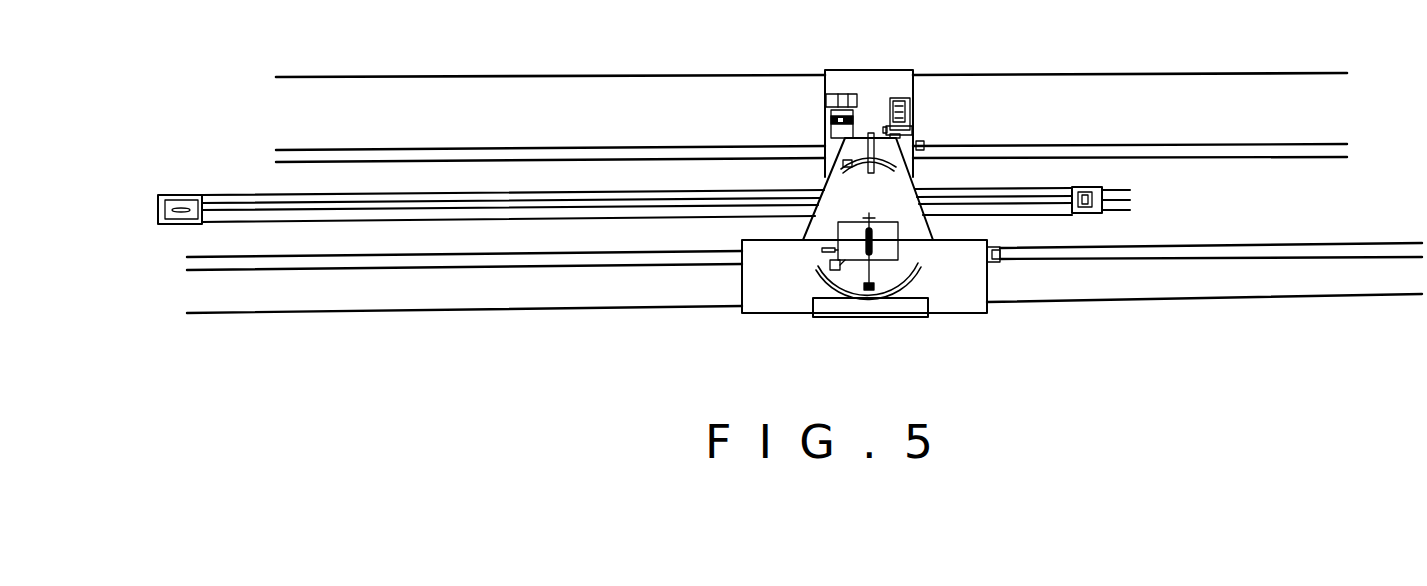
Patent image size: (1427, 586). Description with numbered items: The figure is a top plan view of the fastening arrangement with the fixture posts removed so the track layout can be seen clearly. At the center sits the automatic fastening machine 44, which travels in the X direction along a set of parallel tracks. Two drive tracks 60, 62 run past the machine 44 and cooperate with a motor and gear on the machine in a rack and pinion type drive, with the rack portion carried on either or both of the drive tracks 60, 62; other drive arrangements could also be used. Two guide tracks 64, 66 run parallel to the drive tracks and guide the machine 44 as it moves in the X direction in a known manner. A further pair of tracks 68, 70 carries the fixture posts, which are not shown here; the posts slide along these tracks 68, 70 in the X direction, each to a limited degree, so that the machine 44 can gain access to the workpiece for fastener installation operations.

The automatic fastening machine 44 is at (924, 132).
The drive track 60 is at (664, 272).
The drive track 62 is at (680, 140).
The guide track 64 is at (592, 312).
The guide track 66 is at (650, 72).
The track 68 is at (357, 228).
The track 70 is at (310, 195).